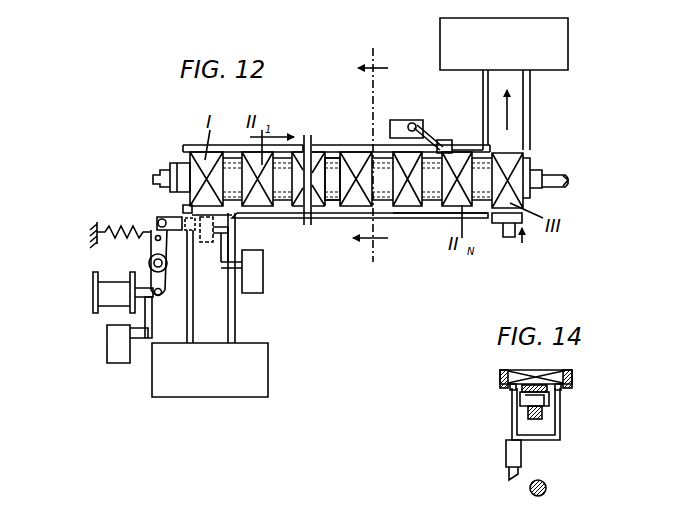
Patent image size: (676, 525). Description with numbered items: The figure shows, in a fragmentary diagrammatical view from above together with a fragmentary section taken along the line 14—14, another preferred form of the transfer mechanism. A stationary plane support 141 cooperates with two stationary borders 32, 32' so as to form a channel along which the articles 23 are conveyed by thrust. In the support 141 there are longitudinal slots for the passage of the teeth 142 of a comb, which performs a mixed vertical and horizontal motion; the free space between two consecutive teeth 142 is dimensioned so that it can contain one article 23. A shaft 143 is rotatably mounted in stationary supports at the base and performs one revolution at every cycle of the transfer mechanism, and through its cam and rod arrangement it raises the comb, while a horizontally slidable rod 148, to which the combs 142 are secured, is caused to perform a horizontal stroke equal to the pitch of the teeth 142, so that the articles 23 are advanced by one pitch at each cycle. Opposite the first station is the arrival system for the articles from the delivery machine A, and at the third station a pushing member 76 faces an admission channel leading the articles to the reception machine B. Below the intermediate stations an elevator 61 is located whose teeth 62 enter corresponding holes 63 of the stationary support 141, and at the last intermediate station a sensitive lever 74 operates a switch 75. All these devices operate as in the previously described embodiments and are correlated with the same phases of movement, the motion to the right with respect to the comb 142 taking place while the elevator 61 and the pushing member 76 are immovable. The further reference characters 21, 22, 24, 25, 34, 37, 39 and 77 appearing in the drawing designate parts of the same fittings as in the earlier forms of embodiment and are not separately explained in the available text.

In FIG. 12, the section line 14- 14 is at (366, 163).
In FIG. 12, the drive unit A 21 is at (220, 338).
In FIG. 12, the push rod 22 is at (207, 320).
In FIG. 14, the article 23 is at (548, 372).
In FIG. 12, the rod 24 is at (238, 217).
In FIG. 12, the actuator block 25 is at (262, 278).
In FIG. 12, the stationary border 32 is at (440, 239).
In FIG. 14, the stationary border 32 is at (589, 382).
In FIG. 12, the stationary border 32' is at (307, 116).
In FIG. 14, the stationary border 32' is at (479, 381).
In FIG. 12, the lever 34 is at (168, 216).
In FIG. 12, the solenoid 37 is at (110, 295).
In FIG. 12, the switch 39 is at (118, 348).
In FIG. 14, the elevator 61 is at (512, 478).
In FIG. 14, the teeth 62 is at (510, 445).
In FIG. 14, the holes 63 is at (510, 388).
In FIG. 12, the sensitive lever 74 is at (443, 140).
In FIG. 12, the switch 75 is at (398, 122).
In FIG. 12, the pushing member 76 is at (510, 230).
In FIG. 12, the feed pipe 77 is at (525, 112).
In FIG. 14, the stationary plane support 141 is at (530, 393).
In FIG. 12, the teeth of the comb 142 is at (334, 170).
In FIG. 14, the teeth of the comb 142 is at (560, 400).
In FIG. 14, the shaft 143 is at (545, 483).
In FIG. 12, the rod 148 is at (165, 172).
In FIG. 14, the rod 148 is at (545, 410).